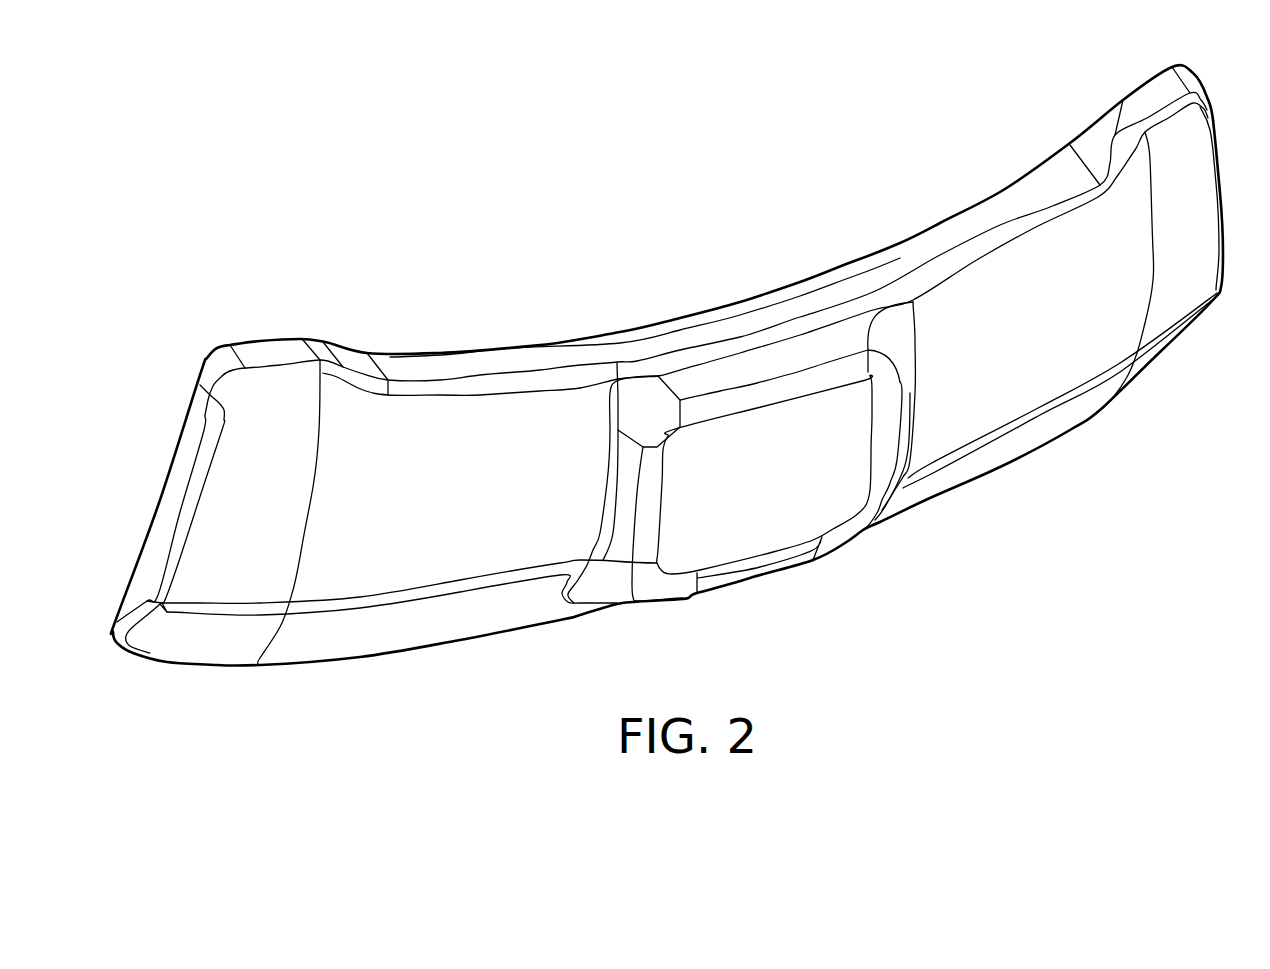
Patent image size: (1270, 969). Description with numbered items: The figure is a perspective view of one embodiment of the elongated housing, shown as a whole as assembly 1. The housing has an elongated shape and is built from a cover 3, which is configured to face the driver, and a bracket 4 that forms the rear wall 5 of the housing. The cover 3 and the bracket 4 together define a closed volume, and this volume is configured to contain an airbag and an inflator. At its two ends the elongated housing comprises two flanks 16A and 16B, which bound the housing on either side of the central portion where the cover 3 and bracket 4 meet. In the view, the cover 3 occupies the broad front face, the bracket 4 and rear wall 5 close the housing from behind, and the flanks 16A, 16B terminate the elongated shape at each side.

The bumper fascia 1 is at (703, 168).
The cover 3 is at (1013, 307).
The bracket 4 is at (703, 231).
The rear wall 5 is at (890, 268).
The flank 16A is at (433, 618).
The flank 16B is at (1012, 442).